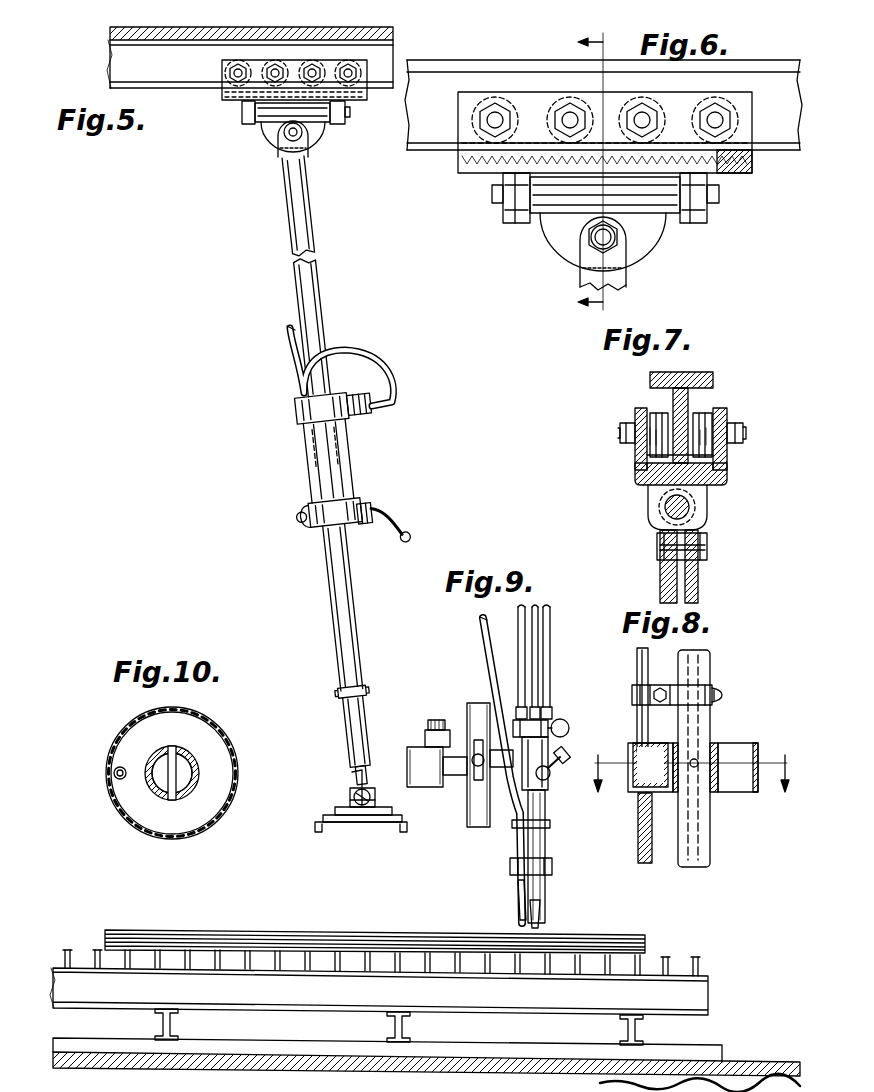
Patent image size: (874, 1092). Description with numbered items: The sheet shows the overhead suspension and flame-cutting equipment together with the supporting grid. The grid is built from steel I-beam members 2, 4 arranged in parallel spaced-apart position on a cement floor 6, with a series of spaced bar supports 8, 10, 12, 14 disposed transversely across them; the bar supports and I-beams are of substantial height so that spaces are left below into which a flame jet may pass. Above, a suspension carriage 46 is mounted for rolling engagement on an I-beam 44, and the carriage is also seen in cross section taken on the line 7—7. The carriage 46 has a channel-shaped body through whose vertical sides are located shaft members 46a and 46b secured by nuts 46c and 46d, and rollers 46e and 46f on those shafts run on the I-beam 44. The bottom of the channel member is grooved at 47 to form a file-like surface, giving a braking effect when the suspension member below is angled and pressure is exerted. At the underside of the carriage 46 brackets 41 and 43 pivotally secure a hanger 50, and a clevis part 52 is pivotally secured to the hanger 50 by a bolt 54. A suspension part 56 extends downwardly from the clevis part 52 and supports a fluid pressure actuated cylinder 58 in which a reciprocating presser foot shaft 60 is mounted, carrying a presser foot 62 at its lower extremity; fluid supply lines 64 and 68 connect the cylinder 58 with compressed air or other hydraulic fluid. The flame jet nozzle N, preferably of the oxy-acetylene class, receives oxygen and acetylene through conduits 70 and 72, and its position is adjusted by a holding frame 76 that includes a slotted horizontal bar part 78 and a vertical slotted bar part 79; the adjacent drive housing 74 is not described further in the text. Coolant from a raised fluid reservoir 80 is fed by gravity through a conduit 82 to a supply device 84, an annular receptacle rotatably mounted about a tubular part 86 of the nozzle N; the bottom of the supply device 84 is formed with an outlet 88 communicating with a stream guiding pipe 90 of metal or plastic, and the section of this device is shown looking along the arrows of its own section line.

In FIG. 9, the I-beam member 2 is at (708, 994).
In FIG. 9, the I-beam member 4 is at (645, 1029).
In FIG. 9, the cement floor 6 is at (715, 1047).
In FIG. 9, the bar support 8 is at (598, 968).
In FIG. 8, the bar support 10 is at (693, 790).
In FIG. 9, the bar support 10 is at (638, 968).
In FIG. 9, the bar support 12 is at (667, 960).
In FIG. 9, the bar support 14 is at (698, 962).
In FIG. 5, the suspension part 56 is at (320, 238).
In FIG. 9, the suspension part 56 is at (375, 933).
In FIG. 6, the bracket 41 is at (700, 224).
In FIG. 6, the bracket 43 is at (515, 225).
In FIG. 6, the I-beam member 44 is at (430, 140).
In FIG. 7, the I-beam member 44 is at (700, 372).
In FIG. 5, the suspension carriage 46 is at (226, 96).
In FIG. 6, the suspension carriage 46 is at (468, 135).
In FIG. 7, the suspension carriage 46 is at (640, 485).
In FIG. 7, the shaft member 46a is at (640, 420).
In FIG. 7, the shaft member 46b is at (722, 425).
In FIG. 7, the nut 46c is at (630, 443).
In FIG. 7, the nut 46d is at (740, 445).
In FIG. 7, the roller 46e is at (658, 420).
In FIG. 7, the roller 46f is at (700, 420).
In FIG. 7, the grooved file-like surface 47 is at (728, 470).
In FIG. 5, the hanger 50 is at (318, 133).
In FIG. 6, the hanger 50 is at (560, 238).
In FIG. 5, the clevis part 52 is at (284, 150).
In FIG. 6, the clevis part 52 is at (630, 275).
In FIG. 7, the clevis part 52 is at (698, 578).
In FIG. 6, the bolt 54 is at (617, 240).
In FIG. 5, the fluid pressure actuated cylinder 58 is at (348, 440).
In FIG. 5, the presser foot shaft 60 is at (366, 786).
In FIG. 5, the presser foot 62 is at (352, 795).
In FIG. 5, the fluid supply line 64 is at (358, 352).
In FIG. 7, the fluid supply line 64 is at (707, 545).
In FIG. 5, the fluid supply line 68 is at (362, 508).
In FIG. 9, the conduit 70 is at (525, 650).
In FIG. 9, the conduit 72 is at (550, 645).
In FIG. 9, the motor box 74 is at (433, 782).
In FIG. 9, the holding frame 76 is at (450, 732).
In FIG. 9, the slotted horizontal bar part 78 is at (463, 775).
In FIG. 9, the vertical slotted bar part 79 is at (478, 700).
In FIG. 9, the fluid reservoir 80 is at (517, 900).
In FIG. 8, the conduit 82 is at (655, 767).
In FIG. 9, the conduit 82 is at (497, 660).
In FIG. 8, the supply device 84 is at (757, 743).
In FIG. 9, the supply device 84 is at (552, 866).
In FIG. 10, the supply device 84 is at (226, 755).
In FIG. 8, the tubular part 86 is at (700, 725).
In FIG. 9, the tubular part 86 is at (548, 842).
In FIG. 8, the outlet 88 is at (650, 780).
In FIG. 10, the outlet 88 is at (113, 773).
In FIG. 8, the stream guiding pipe 90 is at (650, 863).
In FIG. 9, the flame jet nozzle N is at (545, 922).
In FIG. 6, the section line 7- 7 is at (574, 172).